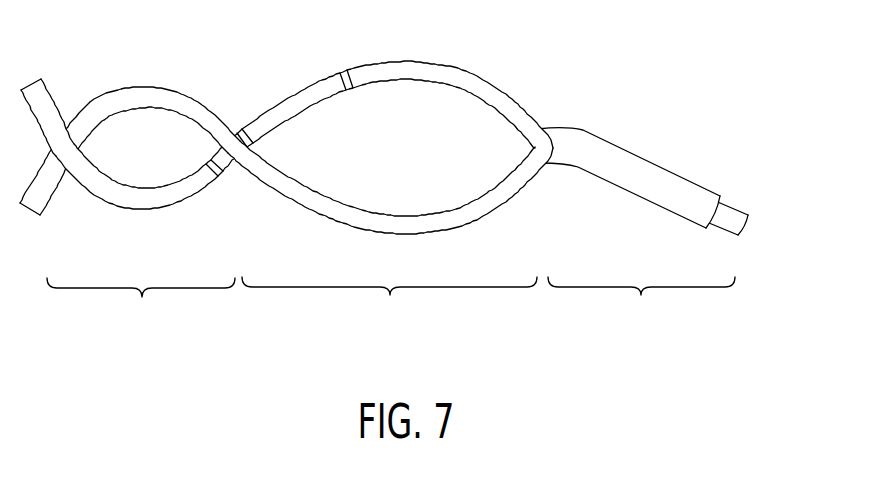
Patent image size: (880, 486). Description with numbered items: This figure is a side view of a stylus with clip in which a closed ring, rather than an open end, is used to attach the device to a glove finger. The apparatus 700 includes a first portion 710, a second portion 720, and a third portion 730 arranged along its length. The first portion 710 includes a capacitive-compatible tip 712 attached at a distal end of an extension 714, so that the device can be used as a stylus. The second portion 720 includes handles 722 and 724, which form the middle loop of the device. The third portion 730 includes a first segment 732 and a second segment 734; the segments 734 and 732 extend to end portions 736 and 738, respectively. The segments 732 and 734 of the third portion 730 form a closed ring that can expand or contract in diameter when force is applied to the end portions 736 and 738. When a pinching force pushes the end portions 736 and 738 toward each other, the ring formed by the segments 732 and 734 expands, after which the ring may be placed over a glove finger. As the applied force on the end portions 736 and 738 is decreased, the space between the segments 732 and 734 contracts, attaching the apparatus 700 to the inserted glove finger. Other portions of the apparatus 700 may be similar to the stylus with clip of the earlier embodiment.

The apparatus 700 is at (407, 167).
The first portion 710 is at (641, 303).
The capacitive-compatible tip 712 is at (653, 165).
The extension 714 is at (732, 213).
The second portion 720 is at (389, 303).
The handle 722 is at (377, 70).
The handle 724 is at (417, 225).
The third portion 730 is at (141, 304).
The first segment 732 is at (138, 98).
The second segment 734 is at (140, 200).
The end portion 736 is at (39, 98).
The end portion 738 is at (38, 193).